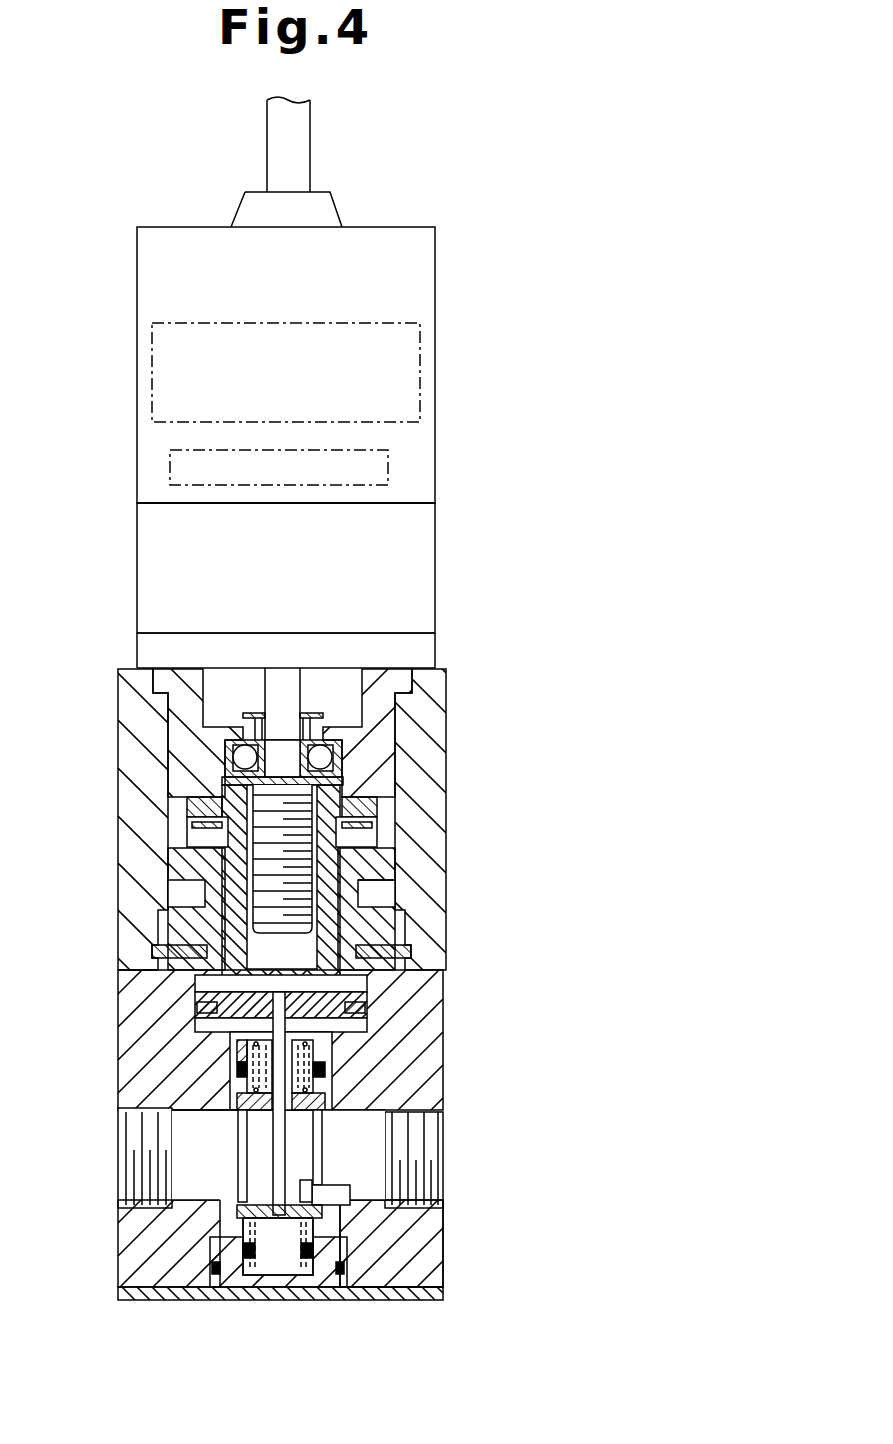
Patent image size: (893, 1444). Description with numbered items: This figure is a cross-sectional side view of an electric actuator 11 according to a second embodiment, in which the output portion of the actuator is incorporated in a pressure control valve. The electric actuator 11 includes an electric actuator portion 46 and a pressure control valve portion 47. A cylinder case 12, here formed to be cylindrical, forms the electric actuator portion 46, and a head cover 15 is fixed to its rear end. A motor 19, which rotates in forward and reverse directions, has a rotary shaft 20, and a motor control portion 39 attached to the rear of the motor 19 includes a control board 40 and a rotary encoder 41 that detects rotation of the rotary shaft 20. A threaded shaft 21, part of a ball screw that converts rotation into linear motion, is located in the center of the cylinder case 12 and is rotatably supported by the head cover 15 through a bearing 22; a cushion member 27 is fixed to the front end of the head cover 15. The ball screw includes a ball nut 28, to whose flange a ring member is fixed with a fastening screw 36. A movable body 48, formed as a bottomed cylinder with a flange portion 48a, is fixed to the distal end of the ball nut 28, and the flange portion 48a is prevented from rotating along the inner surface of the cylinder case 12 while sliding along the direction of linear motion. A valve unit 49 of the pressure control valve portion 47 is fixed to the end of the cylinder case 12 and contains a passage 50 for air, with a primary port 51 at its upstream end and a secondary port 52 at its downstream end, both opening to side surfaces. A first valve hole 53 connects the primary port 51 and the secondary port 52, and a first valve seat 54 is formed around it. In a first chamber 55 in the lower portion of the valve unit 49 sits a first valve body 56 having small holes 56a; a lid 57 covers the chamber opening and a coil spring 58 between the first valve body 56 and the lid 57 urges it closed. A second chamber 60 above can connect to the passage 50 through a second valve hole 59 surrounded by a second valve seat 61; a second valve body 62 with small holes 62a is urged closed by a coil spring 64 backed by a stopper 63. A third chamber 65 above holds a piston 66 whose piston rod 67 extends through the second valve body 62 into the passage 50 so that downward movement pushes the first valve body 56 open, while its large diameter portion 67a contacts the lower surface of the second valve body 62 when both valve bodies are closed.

The electric actuator 11 is at (502, 549).
The cylinder case 12 is at (118, 886).
The head cover 15 is at (398, 690).
The motor 19 is at (137, 554).
The rotary shaft 20 is at (301, 697).
The threaded shaft 21 is at (385, 790).
The bearing 22 is at (233, 745).
The cushion member 27 is at (235, 790).
The ball nut 28 is at (395, 842).
The fastening screw 36 is at (200, 810).
The motor control portion 39 is at (437, 284).
The control board 40 is at (152, 320).
The rotary encoder 41 is at (170, 455).
The electric actuator portion 46 is at (476, 806).
The pressure control valve portion 47 is at (469, 1052).
The movable body 48 is at (393, 925).
The flange portion 48a is at (395, 868).
The valve unit 49 is at (458, 1221).
The passage 50 is at (222, 1210).
The primary port 51 is at (175, 1118).
The secondary port 52 is at (444, 1115).
The first valve hole 53 is at (315, 1195).
The first valve seat 54 is at (242, 1203).
The first chamber 55 is at (216, 1252).
The first valve body 56 is at (345, 1226).
The small holes 56a is at (302, 1185).
The lid 57 is at (322, 1283).
The coil spring 58 is at (262, 1272).
The second valve hole 59 is at (285, 1122).
The second chamber 60 is at (245, 1095).
The second valve seat 61 is at (238, 1068).
The second valve body 62 is at (318, 1070).
The small holes 62a is at (246, 1125).
The stopper 63 is at (240, 1037).
The coil spring 64 is at (245, 1043).
The third chamber 65 is at (335, 1047).
The piston 66 is at (210, 996).
The piston rod 67 is at (285, 1006).
The large diameter portion 67a is at (222, 1118).